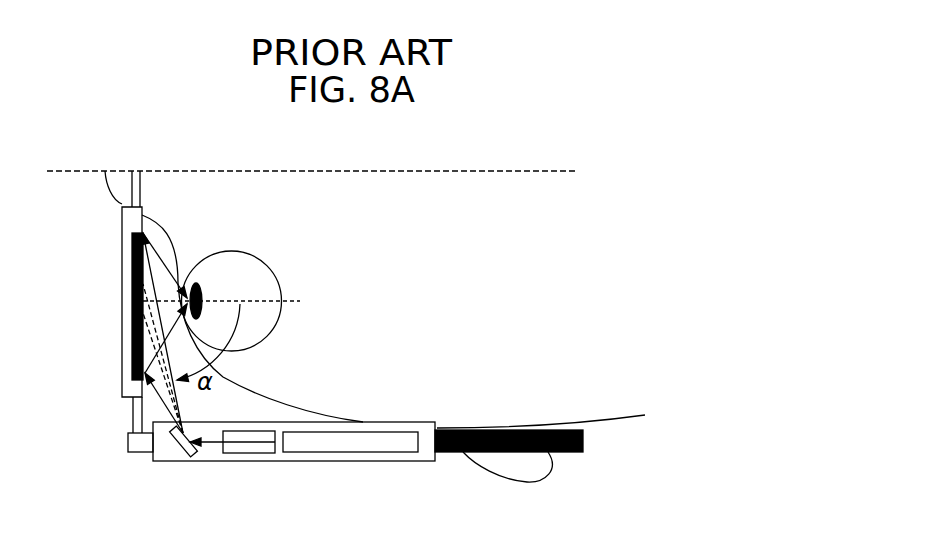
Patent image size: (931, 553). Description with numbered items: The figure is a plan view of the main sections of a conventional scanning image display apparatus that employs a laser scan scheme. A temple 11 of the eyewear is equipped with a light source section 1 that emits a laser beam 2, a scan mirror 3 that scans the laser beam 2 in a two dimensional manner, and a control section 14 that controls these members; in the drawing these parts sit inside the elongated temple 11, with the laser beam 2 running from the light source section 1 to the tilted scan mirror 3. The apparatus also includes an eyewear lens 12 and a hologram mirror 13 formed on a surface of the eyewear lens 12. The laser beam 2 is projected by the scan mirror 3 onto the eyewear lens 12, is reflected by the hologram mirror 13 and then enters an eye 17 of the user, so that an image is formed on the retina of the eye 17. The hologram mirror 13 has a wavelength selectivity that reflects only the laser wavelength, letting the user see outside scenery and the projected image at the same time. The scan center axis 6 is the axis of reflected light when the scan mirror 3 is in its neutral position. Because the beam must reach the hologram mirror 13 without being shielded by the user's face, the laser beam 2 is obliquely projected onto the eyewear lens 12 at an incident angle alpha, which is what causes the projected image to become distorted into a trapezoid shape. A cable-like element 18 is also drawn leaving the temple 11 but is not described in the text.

The light source section 1 is at (257, 451).
The laser beam 2 is at (211, 445).
The scan mirror 3 is at (182, 462).
The scan center axis 6 is at (143, 362).
The temple 11 is at (328, 461).
The eyewear lens 12 is at (123, 386).
The hologram mirror 13 is at (133, 267).
The control section 14 is at (373, 450).
The eye 17 is at (247, 275).
The cable 18 is at (533, 473).